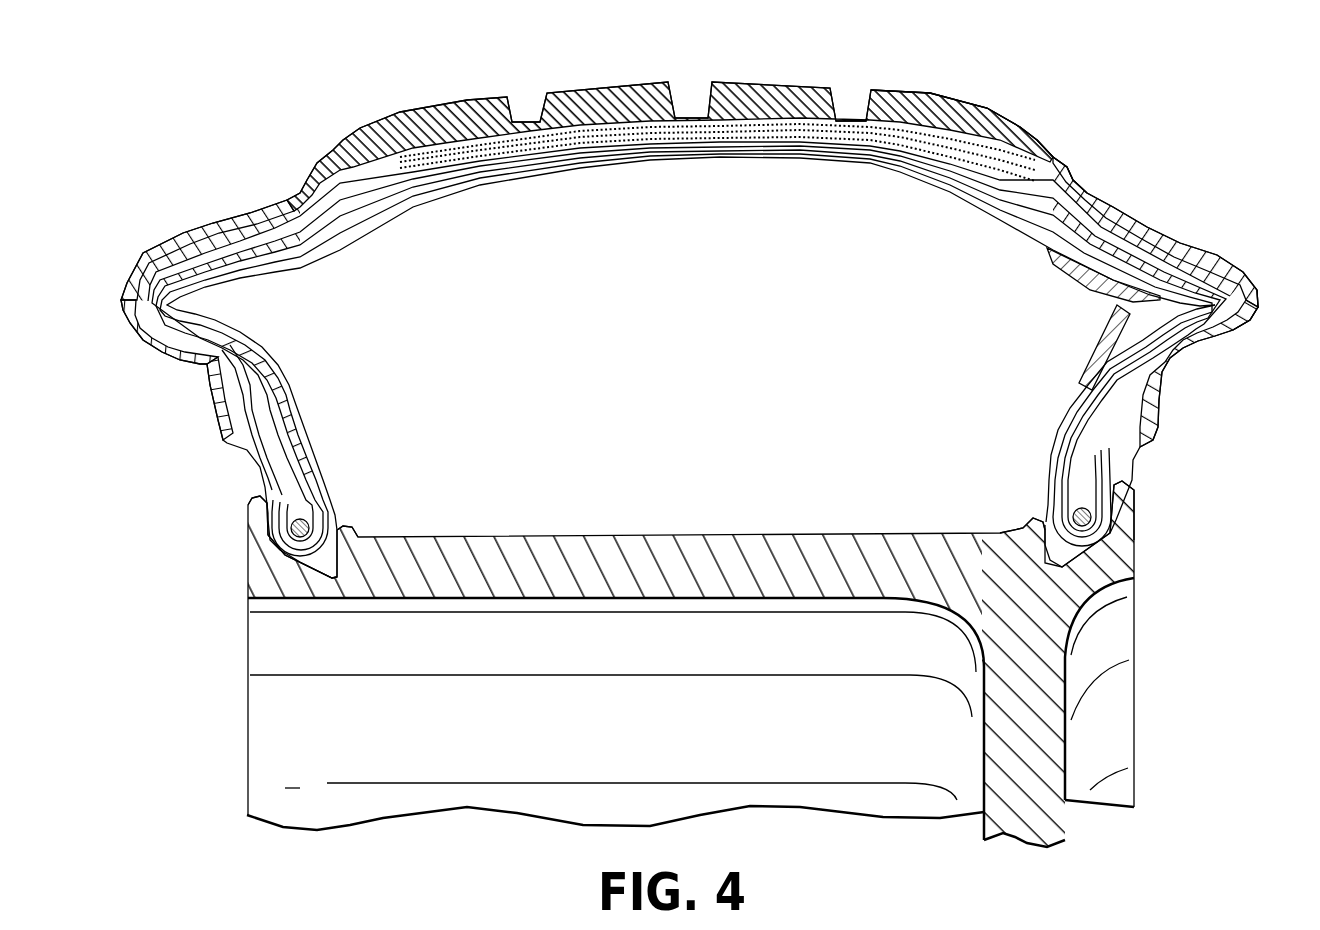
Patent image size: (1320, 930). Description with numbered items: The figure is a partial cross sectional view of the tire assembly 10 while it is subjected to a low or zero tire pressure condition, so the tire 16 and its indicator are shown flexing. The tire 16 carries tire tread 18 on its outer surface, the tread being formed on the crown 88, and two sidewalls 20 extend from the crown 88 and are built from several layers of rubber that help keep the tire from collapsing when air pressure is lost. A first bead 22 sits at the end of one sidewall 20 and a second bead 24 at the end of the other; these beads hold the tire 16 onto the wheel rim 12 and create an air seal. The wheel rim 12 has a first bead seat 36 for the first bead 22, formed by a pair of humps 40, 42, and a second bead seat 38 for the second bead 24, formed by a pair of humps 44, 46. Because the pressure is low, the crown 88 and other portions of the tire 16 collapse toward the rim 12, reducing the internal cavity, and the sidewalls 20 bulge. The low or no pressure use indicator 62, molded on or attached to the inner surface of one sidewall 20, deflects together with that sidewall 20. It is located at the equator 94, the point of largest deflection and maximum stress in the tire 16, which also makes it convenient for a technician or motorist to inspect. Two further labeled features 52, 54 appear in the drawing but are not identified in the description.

The tire assembly 10 is at (296, 119).
The wheel rim 12 is at (567, 563).
The tire 16 is at (1015, 115).
The tire tread 18 is at (676, 97).
The sidewalls 20 is at (121, 293).
The first bead 22 is at (1157, 435).
The second bead 24 is at (220, 418).
The first bead seat 36 is at (1105, 518).
The second bead seat 38 is at (260, 540).
The hump 40 is at (1030, 521).
The hump 42 is at (1131, 500).
The hump 44 is at (360, 533).
The hump 46 is at (247, 513).
The rim well 52 is at (873, 570).
The belt package 54 is at (600, 178).
The low or no pressure use indicator 62 is at (1064, 299).
The crown 88 is at (948, 100).
The equator 94 is at (1264, 304).